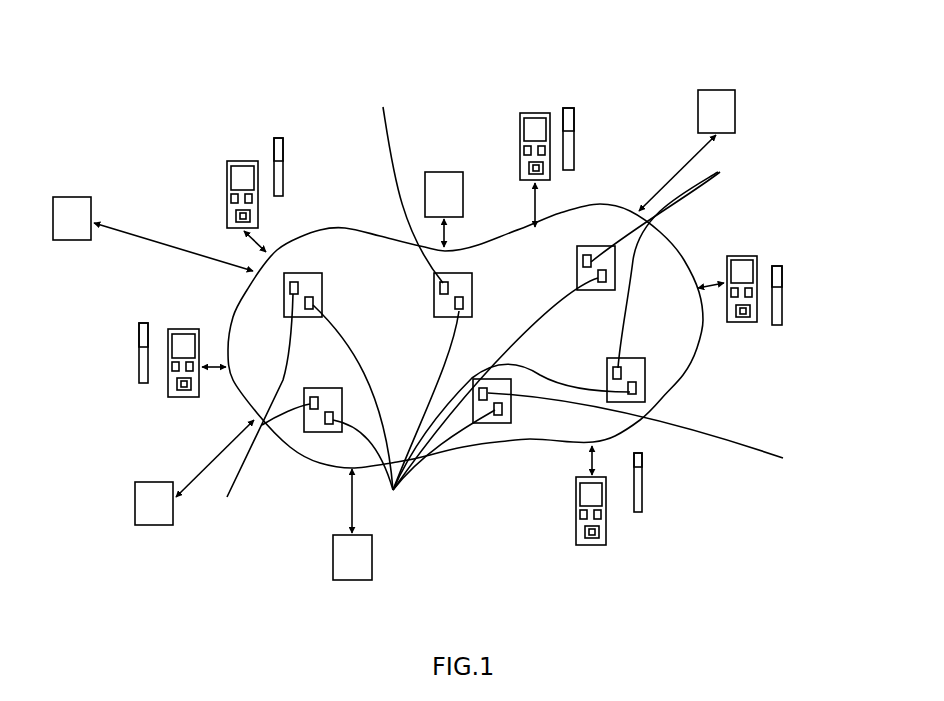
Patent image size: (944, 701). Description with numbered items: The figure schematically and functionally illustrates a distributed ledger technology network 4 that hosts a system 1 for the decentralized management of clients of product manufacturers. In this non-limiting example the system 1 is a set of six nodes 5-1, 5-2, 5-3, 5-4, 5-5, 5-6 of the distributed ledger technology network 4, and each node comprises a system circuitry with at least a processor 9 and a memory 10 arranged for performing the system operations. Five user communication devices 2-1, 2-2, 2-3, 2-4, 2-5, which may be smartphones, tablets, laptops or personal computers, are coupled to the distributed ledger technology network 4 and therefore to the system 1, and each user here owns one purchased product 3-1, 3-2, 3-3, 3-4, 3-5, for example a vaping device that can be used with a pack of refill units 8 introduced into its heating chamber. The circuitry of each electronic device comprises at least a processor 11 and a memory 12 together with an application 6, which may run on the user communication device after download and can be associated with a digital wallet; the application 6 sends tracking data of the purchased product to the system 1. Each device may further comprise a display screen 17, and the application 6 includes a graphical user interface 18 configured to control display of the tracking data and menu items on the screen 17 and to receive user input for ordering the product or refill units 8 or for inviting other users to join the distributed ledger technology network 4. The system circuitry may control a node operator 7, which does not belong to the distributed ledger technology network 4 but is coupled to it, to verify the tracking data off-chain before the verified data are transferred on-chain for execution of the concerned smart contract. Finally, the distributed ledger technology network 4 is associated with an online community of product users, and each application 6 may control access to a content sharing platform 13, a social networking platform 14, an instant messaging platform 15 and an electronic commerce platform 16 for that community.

The system 1 is at (454, 336).
The user communication device 2-1 is at (185, 397).
The user communication device 2-2 is at (595, 545).
The user communication device 2-3 is at (743, 256).
The user communication device 2-4 is at (543, 113).
The user communication device 2-5 is at (227, 192).
The purchased product 3-1 is at (139, 358).
The purchased product 3-2 is at (643, 495).
The purchased product 3-3 is at (783, 297).
The purchased product 3-4 is at (574, 145).
The purchased product 3-5 is at (284, 178).
The distributed ledger technology network 4 is at (424, 369).
The node 5-1 is at (323, 432).
The node 5-2 is at (493, 423).
The node 5-3 is at (647, 384).
The node 5-4 is at (594, 246).
The node 5-5 is at (440, 288).
The node 5-6 is at (284, 290).
The application 6 is at (243, 216).
The node operator 7 is at (440, 172).
The refill unit 8 is at (277, 153).
The processor 9 is at (471, 402).
The memory 10 is at (508, 306).
The processor 11 is at (231, 198).
The memory 12 is at (251, 199).
The content sharing platform 13 is at (68, 197).
The social networking platform 14 is at (153, 525).
The instant messaging platform 15 is at (372, 550).
The electronic commerce platform 16 is at (720, 90).
The display screen 17 is at (240, 166).
The graphical user interface 18 is at (236, 213).